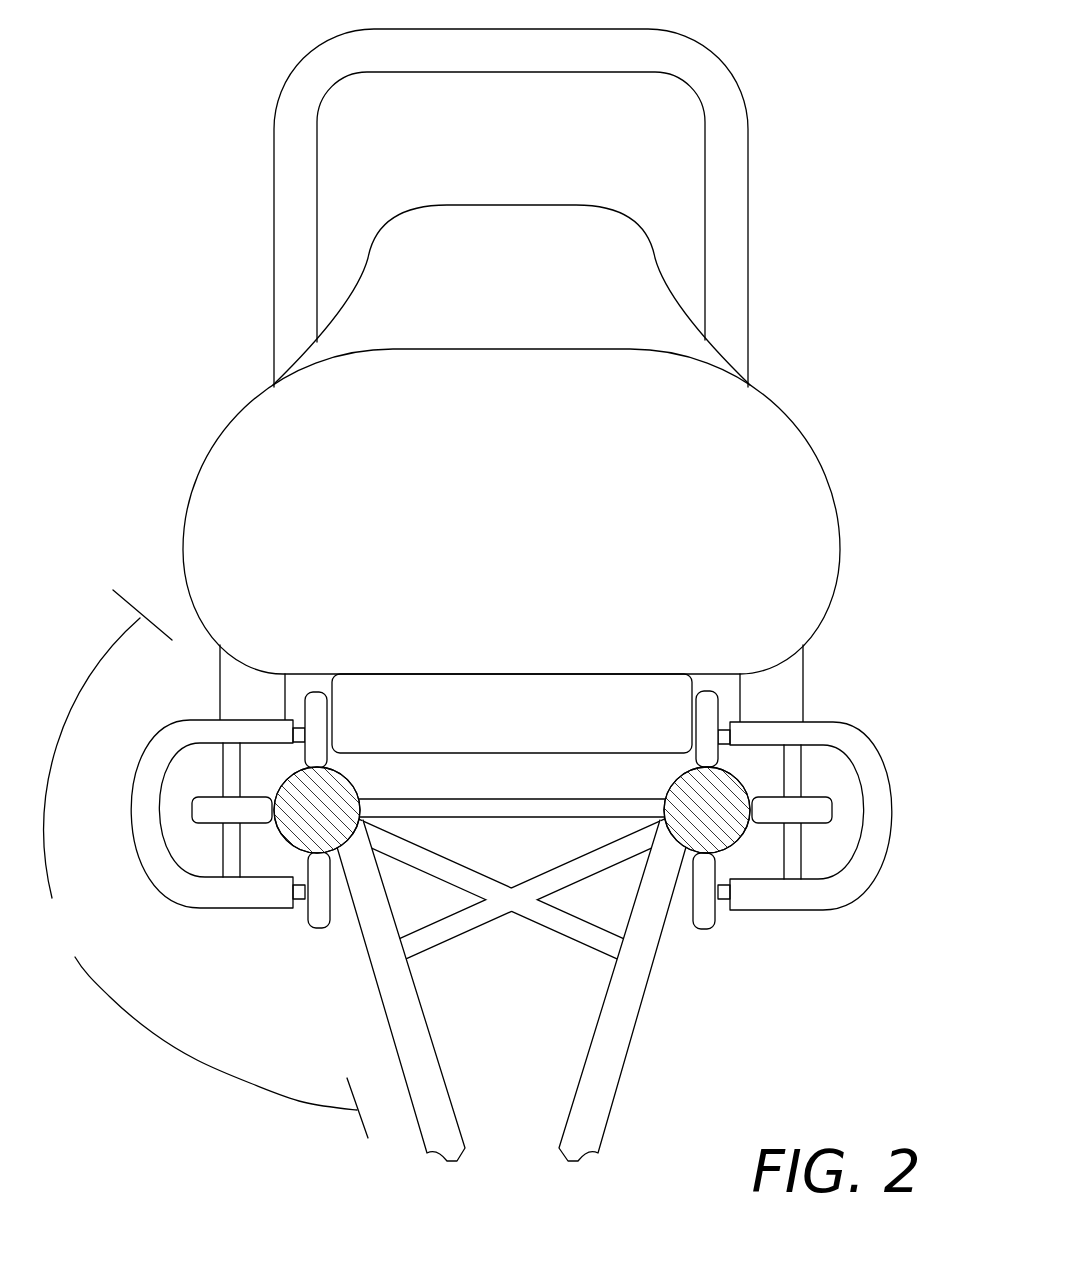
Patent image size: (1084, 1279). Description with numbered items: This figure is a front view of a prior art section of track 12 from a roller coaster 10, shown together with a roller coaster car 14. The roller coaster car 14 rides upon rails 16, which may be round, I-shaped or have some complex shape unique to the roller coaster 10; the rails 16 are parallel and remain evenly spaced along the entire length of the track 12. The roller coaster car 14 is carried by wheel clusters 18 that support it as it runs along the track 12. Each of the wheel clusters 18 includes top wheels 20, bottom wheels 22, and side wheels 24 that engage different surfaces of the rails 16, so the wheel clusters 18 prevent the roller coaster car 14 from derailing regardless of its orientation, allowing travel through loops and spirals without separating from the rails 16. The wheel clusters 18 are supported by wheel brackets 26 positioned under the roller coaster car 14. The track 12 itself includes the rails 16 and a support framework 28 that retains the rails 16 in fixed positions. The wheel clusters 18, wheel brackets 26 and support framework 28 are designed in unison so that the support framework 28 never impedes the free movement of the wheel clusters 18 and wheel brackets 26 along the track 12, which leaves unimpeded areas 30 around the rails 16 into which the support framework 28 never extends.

The roller coaster 10 is at (805, 225).
The track 12 is at (658, 990).
The roller coaster car 14 is at (763, 463).
The rails 16 is at (663, 795).
The wheel clusters 18 is at (907, 790).
The top wheels 20 is at (315, 715).
The bottom wheels 22 is at (313, 920).
The side wheels 24 is at (213, 812).
The wheel brackets 26 is at (785, 693).
The support framework 28 is at (465, 927).
The unimpeded areas 30 is at (206, 864).